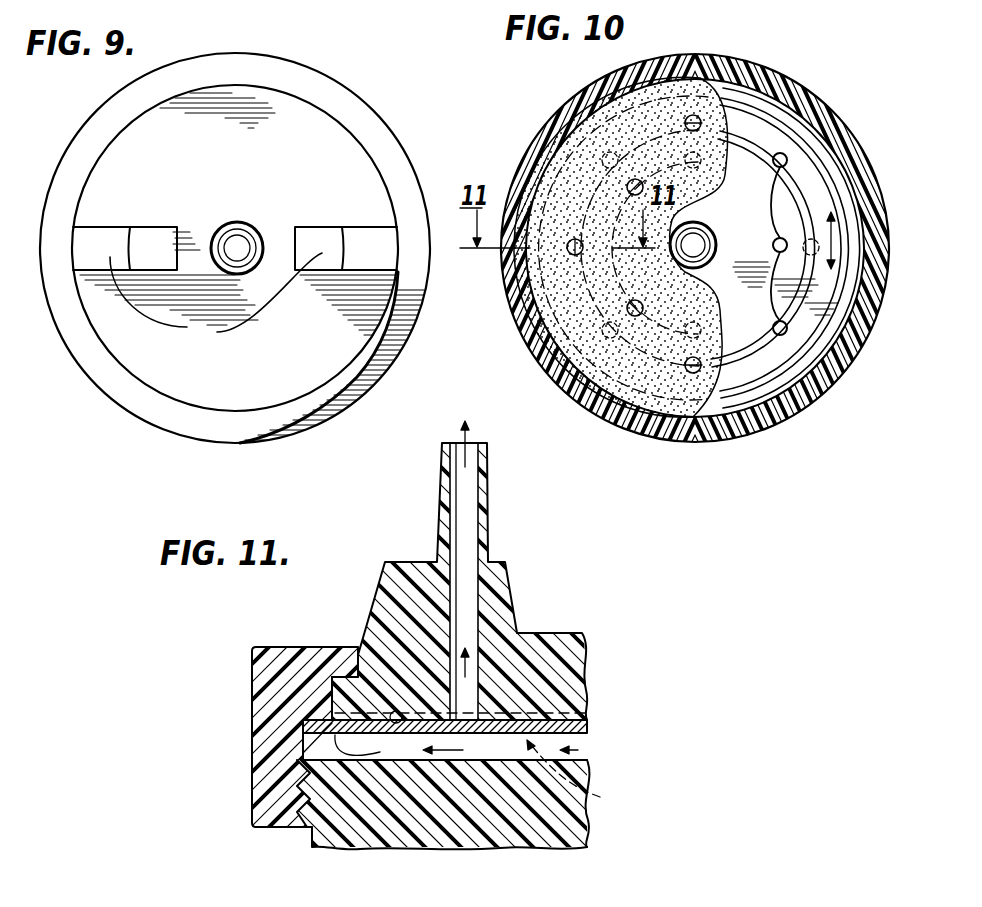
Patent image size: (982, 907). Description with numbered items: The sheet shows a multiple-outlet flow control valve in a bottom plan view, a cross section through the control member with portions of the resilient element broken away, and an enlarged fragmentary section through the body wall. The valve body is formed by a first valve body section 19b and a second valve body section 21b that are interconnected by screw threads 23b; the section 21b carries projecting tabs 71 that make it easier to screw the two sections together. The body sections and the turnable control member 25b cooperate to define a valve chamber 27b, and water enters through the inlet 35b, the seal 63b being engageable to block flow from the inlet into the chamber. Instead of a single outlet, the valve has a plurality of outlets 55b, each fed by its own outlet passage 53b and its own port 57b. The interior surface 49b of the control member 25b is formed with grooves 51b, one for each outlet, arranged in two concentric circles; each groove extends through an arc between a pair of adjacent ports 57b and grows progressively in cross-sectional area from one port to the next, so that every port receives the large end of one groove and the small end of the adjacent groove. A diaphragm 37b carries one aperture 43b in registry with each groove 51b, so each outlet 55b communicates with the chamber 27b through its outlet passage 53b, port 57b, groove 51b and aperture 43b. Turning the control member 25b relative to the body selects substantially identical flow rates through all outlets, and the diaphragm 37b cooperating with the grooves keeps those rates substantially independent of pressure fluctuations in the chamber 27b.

In FIG. 9, the valve body section 19b is at (367, 130).
In FIG. 10, the valve body section 19b is at (700, 432).
In FIG. 11, the valve body section 19b is at (262, 707).
In FIG. 9, the valve body section 21b is at (152, 368).
In FIG. 11, the valve body section 21b is at (325, 823).
In FIG. 11, the screw threads 23b is at (295, 792).
In FIG. 10, the control member 25b is at (768, 124).
In FIG. 11, the valve chamber 27b is at (587, 815).
In FIG. 9, the inlet 35b is at (236, 247).
In FIG. 10, the diaphragm 37b is at (712, 68).
In FIG. 11, the diaphragm 37b is at (588, 724).
In FIG. 10, the aperture 43b is at (737, 270).
In FIG. 11, the aperture 43b is at (303, 753).
In FIG. 10, the interior surface 49b is at (778, 141).
In FIG. 10, the groove 51b is at (667, 70).
In FIG. 11, the groove 51b is at (400, 712).
In FIG. 11, the outlet passage 53b is at (465, 520).
In FIG. 11, the outlet 55b is at (472, 450).
In FIG. 10, the port 57b is at (540, 136).
In FIG. 11, the port 57b is at (352, 662).
In FIG. 10, the seal 63b is at (708, 263).
In FIG. 9, the projecting tabs 71 is at (216, 300).